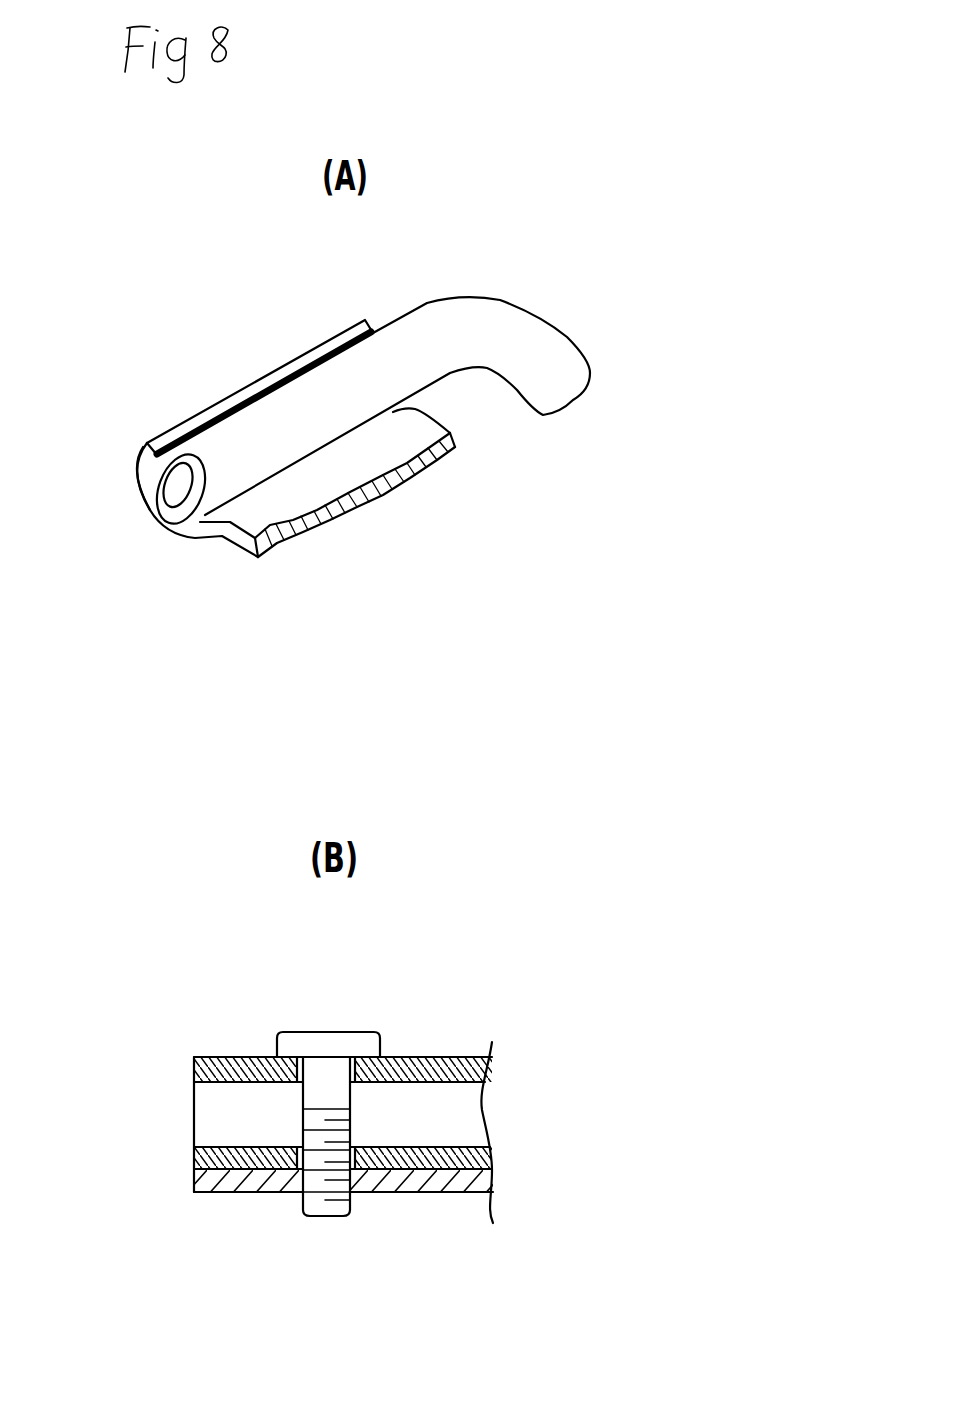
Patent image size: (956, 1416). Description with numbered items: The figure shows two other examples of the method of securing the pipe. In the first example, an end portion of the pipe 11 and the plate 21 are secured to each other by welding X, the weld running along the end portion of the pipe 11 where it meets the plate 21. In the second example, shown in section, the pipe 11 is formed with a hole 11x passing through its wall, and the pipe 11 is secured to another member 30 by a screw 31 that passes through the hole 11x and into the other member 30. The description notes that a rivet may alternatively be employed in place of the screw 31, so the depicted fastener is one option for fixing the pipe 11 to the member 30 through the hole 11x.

The pipe 11 is at (480, 323).
The welding X is at (237, 407).
The plate 21 is at (145, 463).
The screw 31 is at (318, 1040).
The hole 11x is at (356, 1092).
The another member 30 is at (417, 1187).